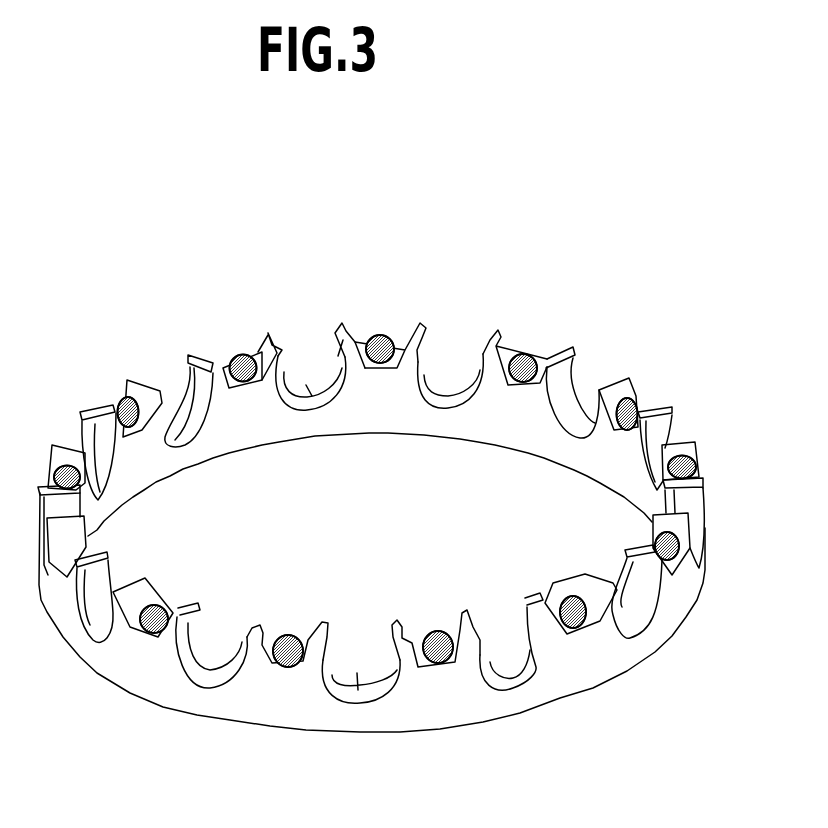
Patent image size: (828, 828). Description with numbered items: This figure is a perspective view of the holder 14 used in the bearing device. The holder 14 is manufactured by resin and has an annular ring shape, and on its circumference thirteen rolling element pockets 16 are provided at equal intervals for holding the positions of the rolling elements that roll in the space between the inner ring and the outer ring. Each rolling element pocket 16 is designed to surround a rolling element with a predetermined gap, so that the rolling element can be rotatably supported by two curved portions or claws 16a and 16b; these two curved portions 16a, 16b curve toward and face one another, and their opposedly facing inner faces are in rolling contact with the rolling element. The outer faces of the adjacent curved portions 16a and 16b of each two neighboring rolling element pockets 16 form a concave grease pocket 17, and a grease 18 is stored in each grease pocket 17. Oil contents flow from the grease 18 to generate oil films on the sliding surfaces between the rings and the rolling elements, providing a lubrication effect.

The holder 14 is at (668, 258).
The rolling element pocket 16 is at (402, 275).
The curved portion 16a is at (250, 345).
The curved portion 16b is at (362, 343).
The grease pocket 17 is at (513, 383).
The grease 18 is at (528, 353).